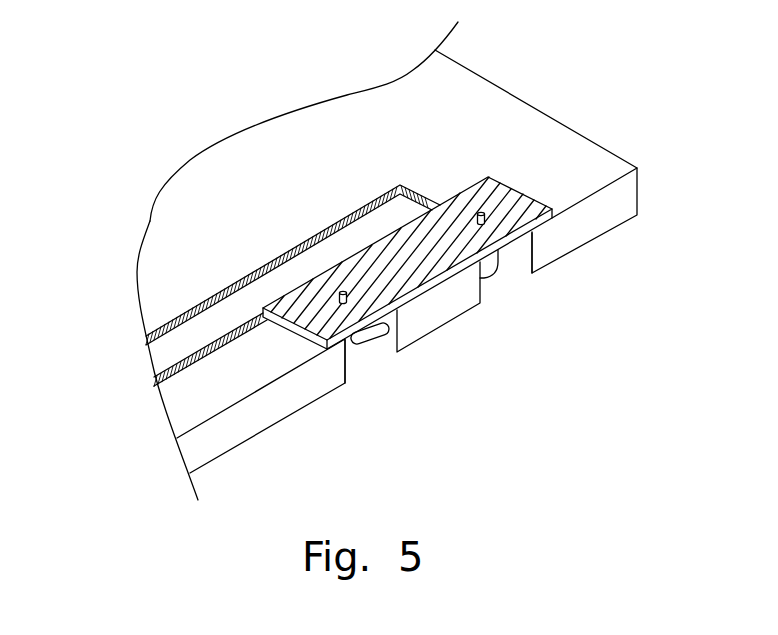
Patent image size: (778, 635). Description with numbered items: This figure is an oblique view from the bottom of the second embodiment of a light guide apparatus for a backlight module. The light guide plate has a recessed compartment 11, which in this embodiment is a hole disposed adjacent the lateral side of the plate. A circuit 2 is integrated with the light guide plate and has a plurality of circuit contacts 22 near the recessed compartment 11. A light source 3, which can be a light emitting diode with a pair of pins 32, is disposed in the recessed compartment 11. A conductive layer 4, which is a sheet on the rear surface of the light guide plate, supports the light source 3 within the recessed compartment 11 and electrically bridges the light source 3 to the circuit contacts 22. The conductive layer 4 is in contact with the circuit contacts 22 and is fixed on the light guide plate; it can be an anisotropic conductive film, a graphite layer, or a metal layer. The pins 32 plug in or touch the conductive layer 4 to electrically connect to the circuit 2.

The circuit 2 is at (187, 309).
The circuit contacts 22 is at (433, 202).
The pins 32 is at (486, 217).
The conductive layer 4 is at (430, 265).
The light source 3 is at (423, 325).
The recessed compartment 11 is at (343, 366).